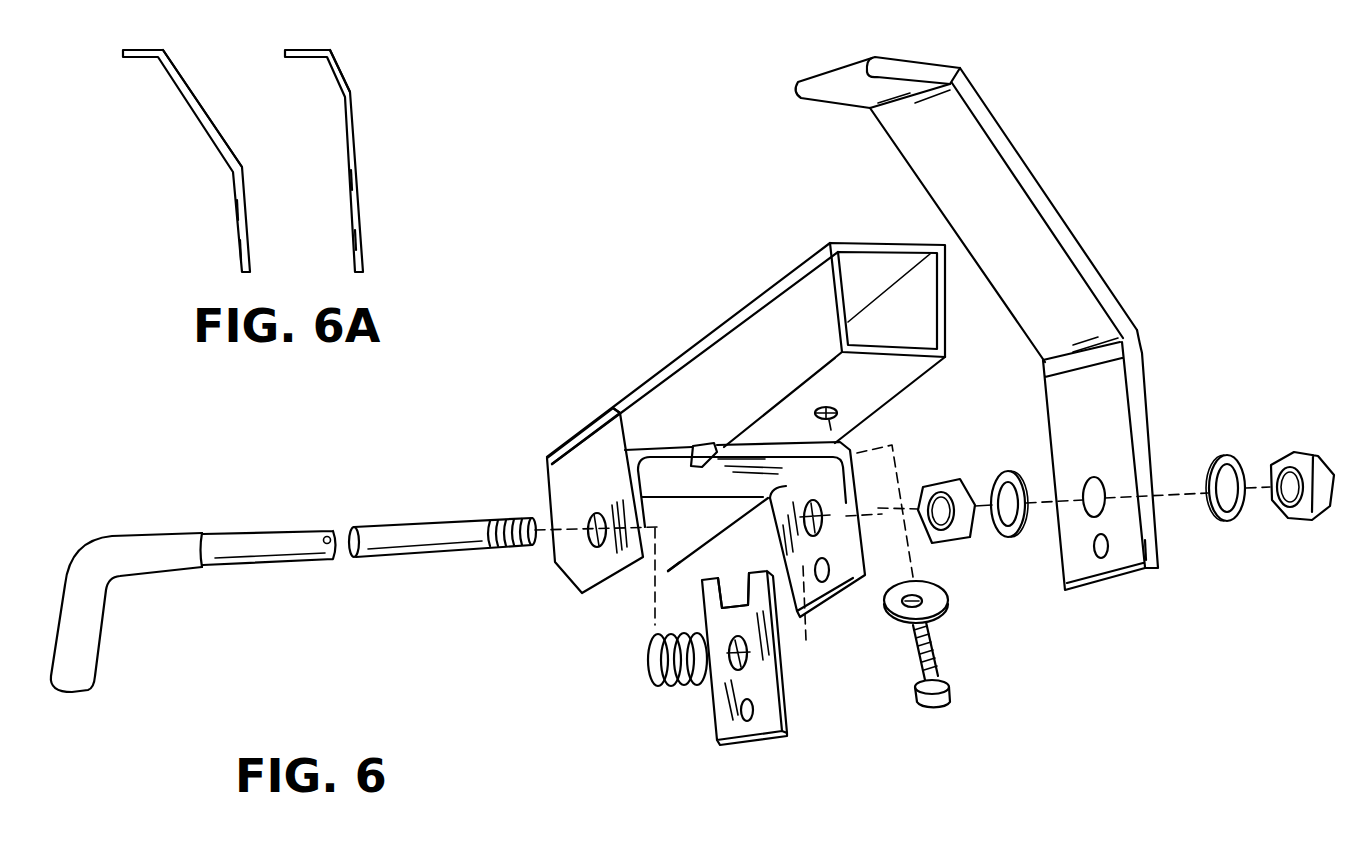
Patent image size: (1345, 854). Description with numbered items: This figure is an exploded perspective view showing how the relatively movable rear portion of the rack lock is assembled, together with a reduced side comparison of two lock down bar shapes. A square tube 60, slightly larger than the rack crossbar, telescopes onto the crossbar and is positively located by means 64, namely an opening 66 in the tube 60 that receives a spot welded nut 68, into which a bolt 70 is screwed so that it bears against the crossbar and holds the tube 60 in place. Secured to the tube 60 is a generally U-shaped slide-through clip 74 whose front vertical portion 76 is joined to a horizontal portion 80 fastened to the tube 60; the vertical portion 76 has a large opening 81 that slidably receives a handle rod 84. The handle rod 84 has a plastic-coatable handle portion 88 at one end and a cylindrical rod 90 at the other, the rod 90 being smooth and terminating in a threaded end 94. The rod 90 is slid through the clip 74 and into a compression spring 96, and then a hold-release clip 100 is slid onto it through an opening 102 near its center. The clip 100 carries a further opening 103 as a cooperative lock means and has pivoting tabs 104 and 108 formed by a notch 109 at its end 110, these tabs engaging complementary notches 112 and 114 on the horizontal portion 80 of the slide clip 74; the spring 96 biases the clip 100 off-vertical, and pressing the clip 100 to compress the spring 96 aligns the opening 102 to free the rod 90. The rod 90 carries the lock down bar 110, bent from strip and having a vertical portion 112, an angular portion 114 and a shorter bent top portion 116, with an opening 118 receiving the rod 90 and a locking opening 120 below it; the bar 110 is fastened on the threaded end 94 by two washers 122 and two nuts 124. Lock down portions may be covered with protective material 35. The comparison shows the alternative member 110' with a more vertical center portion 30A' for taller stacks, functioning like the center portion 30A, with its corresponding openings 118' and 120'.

In FIG. 6, the protective material 35 is at (988, 197).
In FIG. 6, the tube 60 is at (665, 360).
In FIG. 6, the means for positively locating the tube 64 is at (955, 676).
In FIG. 6, the opening 66 is at (838, 420).
In FIG. 6, the nut 68 is at (930, 598).
In FIG. 6, the bolt 70 is at (933, 657).
In FIG. 6, the slide-through clip 74 is at (564, 491).
In FIG. 6, the front vertical portion 76 is at (564, 469).
In FIG. 6, the horizontal portion 80 is at (628, 440).
In FIG. 6, the opening 81 is at (590, 524).
In FIG. 6, the handle rod 84 is at (193, 575).
In FIG. 6, the handle portion 88 is at (83, 608).
In FIG. 6, the cylindrical rod 90 is at (442, 485).
In FIG. 6, the threaded end 94 is at (516, 516).
In FIG. 6, the compression spring 96 is at (682, 683).
In FIG. 6, the hold-release clip 100 is at (757, 650).
In FIG. 6, the opening 102 is at (750, 656).
In FIG. 6, the opening 103 is at (734, 720).
In FIG. 6, the pivoting tab 104 is at (736, 521).
In FIG. 6, the pivoting tab 108 is at (788, 486).
In FIG. 6, the notch 109 is at (723, 607).
In FIG. 6A, the lock down bar 110 is at (180, 161).
In FIG. 6, the lock down bar 110 is at (917, 343).
In FIG. 6, the vertical portion 112 is at (675, 490).
In FIG. 6, the angular portion 114 is at (697, 455).
In FIG. 6, the top portion 116 is at (930, 68).
In FIG. 6A, the opening 118 is at (188, 213).
In FIG. 6, the opening 118 is at (1162, 437).
In FIG. 6A, the locking opening 120 is at (193, 255).
In FIG. 6, the locking opening 120 is at (1120, 582).
In FIG. 6, the washer 122 is at (1013, 537).
In FIG. 6, the nut 124 is at (963, 487).
In FIG. 6A, the center portion 30A is at (200, 123).
In FIG. 6A, the member 110' is at (372, 157).
In FIG. 6A, the center portion 30A' is at (390, 92).
In FIG. 6A, the hole 118' is at (405, 172).
In FIG. 6A, the hole 120' is at (402, 232).